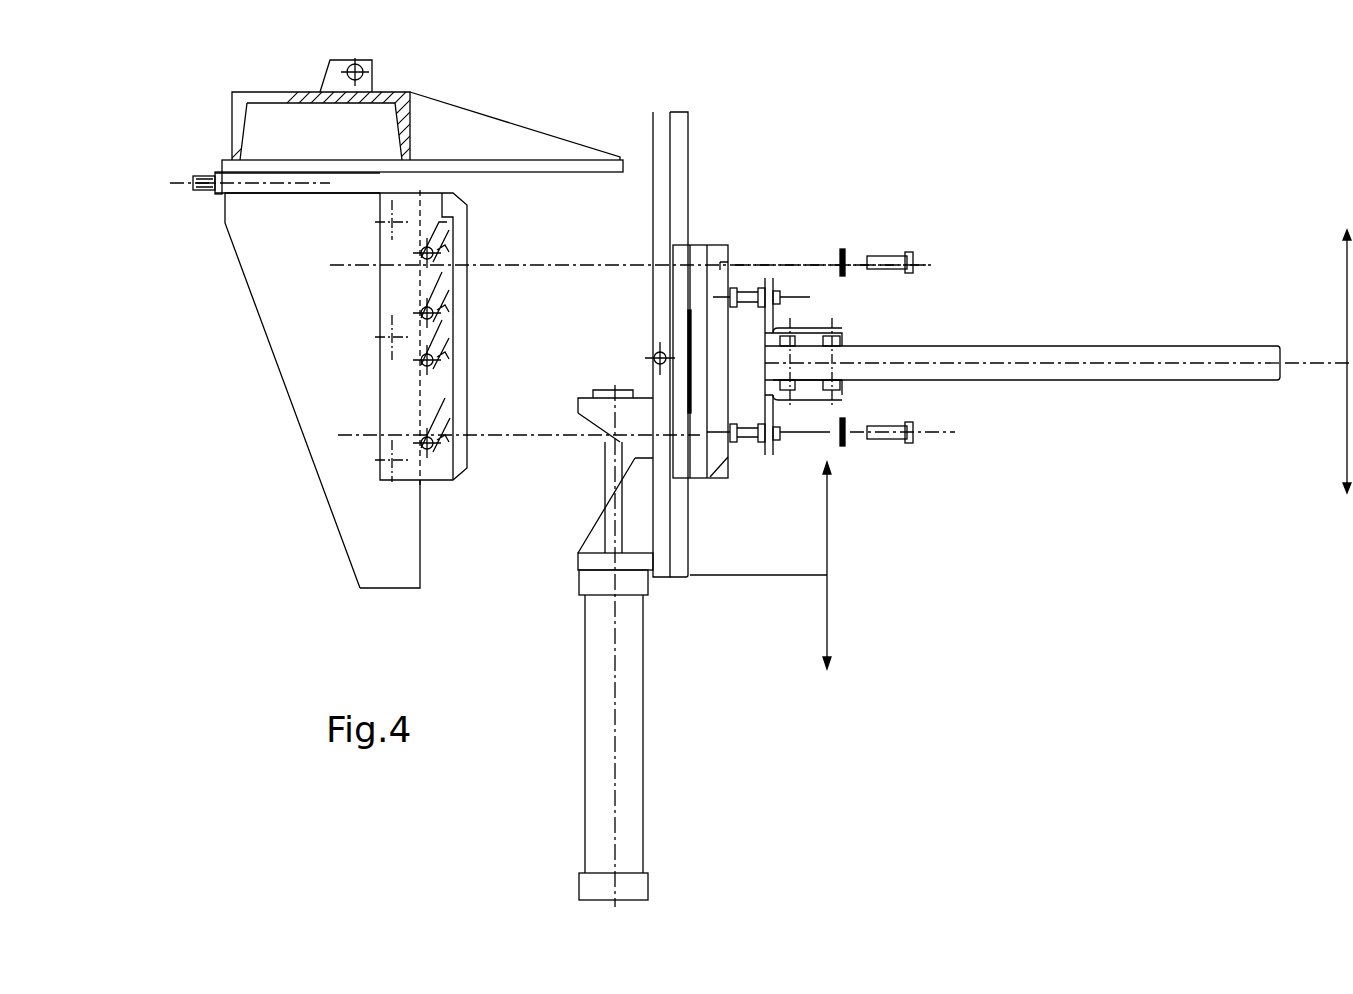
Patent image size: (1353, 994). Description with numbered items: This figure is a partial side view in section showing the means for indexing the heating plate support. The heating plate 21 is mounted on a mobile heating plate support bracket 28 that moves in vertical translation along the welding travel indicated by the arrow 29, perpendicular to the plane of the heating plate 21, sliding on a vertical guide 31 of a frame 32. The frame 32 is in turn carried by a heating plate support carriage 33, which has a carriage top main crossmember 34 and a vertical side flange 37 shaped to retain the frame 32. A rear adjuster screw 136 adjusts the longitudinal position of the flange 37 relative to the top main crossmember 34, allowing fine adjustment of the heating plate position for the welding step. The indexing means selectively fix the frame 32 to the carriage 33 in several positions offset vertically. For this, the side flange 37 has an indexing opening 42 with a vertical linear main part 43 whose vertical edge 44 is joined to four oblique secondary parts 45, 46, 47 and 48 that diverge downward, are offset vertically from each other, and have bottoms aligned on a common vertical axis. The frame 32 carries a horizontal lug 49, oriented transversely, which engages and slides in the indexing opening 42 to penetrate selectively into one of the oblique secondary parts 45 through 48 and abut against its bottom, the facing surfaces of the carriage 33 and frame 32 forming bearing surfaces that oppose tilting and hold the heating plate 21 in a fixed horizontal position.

The heating plate 21 is at (1065, 355).
The mobile heating plate support bracket 28 is at (697, 256).
The welding travel 29 is at (1347, 460).
The vertical guide 31 is at (680, 184).
The frame 32 is at (660, 222).
The heating plate support carriage 33 is at (268, 386).
The carriage top main crossmember 34 is at (277, 92).
The vertical side flange 37 is at (347, 470).
The indexing opening 42 is at (437, 252).
The vertical linear main part 43 is at (447, 308).
The vertical edge 44 is at (448, 372).
The oblique secondary part 45 is at (433, 236).
The oblique secondary part 46 is at (433, 298).
The oblique secondary part 47 is at (430, 346).
The oblique secondary part 48 is at (437, 420).
The horizontal lug 49 is at (656, 353).
The rear adjuster screw 136 is at (204, 175).